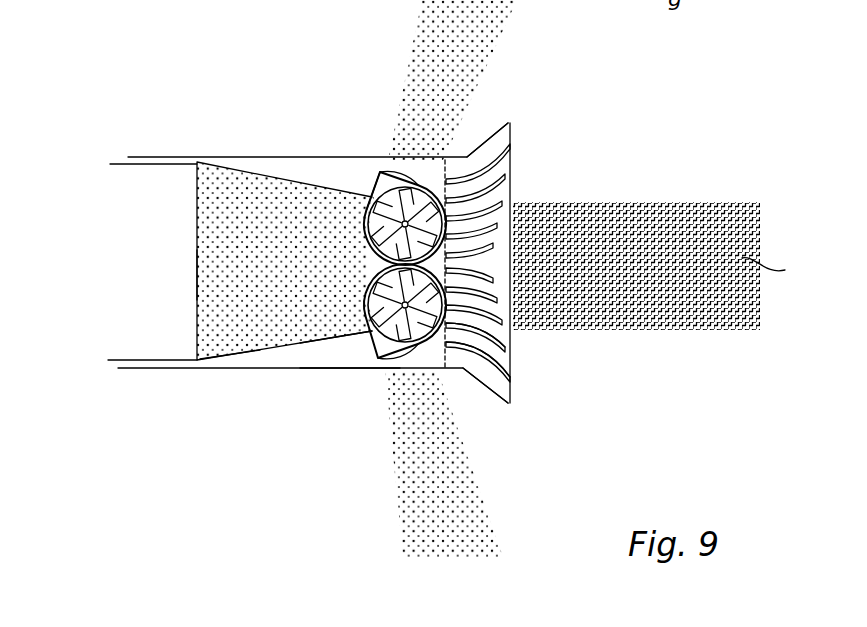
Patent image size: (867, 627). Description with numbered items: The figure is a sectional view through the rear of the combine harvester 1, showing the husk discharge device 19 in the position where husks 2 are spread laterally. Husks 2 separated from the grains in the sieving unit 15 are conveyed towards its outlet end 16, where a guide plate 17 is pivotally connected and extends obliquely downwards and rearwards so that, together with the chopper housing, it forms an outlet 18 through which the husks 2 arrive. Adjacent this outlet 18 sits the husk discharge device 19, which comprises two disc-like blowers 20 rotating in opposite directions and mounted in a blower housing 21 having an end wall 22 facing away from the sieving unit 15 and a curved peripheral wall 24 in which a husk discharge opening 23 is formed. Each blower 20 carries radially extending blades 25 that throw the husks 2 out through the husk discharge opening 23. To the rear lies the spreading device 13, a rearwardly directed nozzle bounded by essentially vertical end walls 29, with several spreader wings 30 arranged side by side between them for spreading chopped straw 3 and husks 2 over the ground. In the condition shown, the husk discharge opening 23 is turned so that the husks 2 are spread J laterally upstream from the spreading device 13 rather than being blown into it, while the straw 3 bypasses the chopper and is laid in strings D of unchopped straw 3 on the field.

The combine harvester 1 is at (168, 405).
The husks 2 is at (210, 250).
The straw 3 is at (657, 237).
The spreading device 13 is at (494, 118).
The sieving unit 15 is at (103, 340).
The outlet end 16 is at (197, 301).
The guide plate 17 is at (243, 355).
The outlet 18 is at (393, 254).
The husk discharge device 19 is at (366, 357).
The disc-like blower 20 is at (383, 174).
The blower housing 21 is at (372, 320).
The end wall 22 is at (374, 333).
The husk discharge opening 23 is at (393, 172).
The curved peripheral wall 24 is at (419, 182).
The radially extending blades 25 is at (378, 173).
The end wall 29 is at (512, 140).
The spreader wings 30 is at (507, 373).
The lateral spreading of husks J is at (432, 40).
The strings of unchopped straw D is at (773, 262).